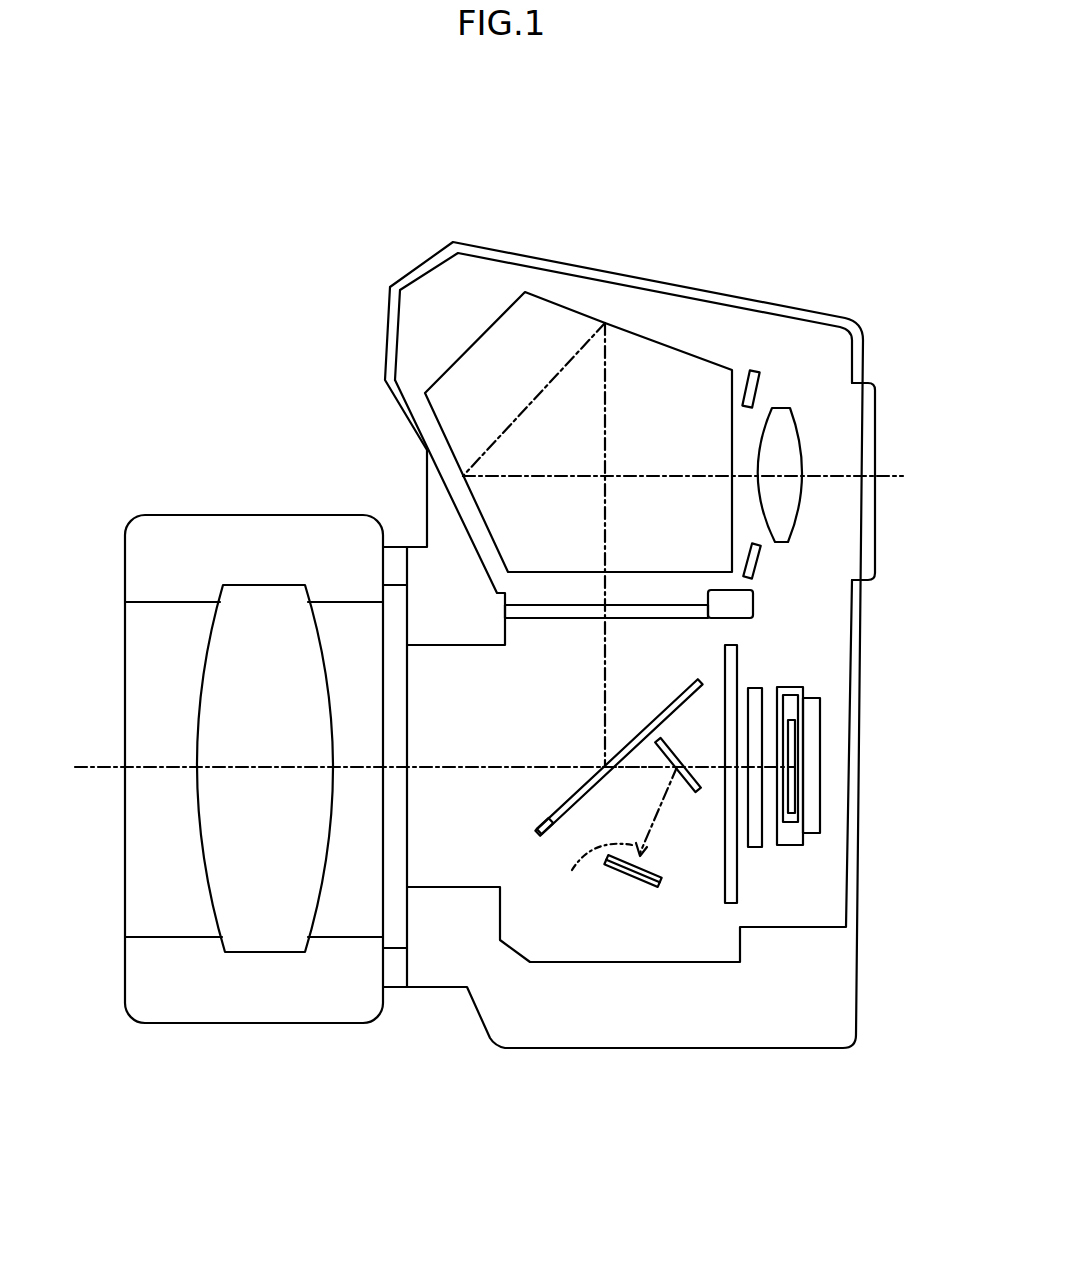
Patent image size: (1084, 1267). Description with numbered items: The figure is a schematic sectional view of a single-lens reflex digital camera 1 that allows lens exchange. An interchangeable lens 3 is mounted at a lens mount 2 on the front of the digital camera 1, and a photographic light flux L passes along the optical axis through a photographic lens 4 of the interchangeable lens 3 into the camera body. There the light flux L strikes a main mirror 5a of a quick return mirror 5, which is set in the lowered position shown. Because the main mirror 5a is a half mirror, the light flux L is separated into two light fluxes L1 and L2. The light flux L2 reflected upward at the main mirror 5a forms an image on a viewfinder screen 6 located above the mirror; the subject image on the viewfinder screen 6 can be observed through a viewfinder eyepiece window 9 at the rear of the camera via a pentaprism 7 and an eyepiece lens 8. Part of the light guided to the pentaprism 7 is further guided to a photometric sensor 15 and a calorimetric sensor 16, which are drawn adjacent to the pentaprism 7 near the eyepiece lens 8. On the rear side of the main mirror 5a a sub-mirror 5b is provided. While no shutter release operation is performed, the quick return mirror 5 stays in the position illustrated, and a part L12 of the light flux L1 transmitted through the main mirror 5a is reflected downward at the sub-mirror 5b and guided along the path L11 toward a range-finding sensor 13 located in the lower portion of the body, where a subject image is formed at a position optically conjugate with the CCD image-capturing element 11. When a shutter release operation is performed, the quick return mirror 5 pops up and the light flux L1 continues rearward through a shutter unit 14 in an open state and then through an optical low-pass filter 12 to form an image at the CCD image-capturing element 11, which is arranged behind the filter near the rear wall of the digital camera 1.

The digital camera 1 is at (588, 275).
The lens mount 2 is at (393, 560).
The interchangeable lens 3 is at (240, 515).
The photographic lens 4 is at (223, 873).
The quick return mirror 5 is at (563, 761).
The main mirror 5a is at (538, 830).
The sub-mirror 5b is at (692, 738).
The viewfinder screen 6 is at (647, 610).
The pentaprism 7 is at (672, 362).
The eyepiece lens 8 is at (788, 418).
The viewfinder eyepiece window 9 is at (863, 427).
The CCD image-capturing element 11 is at (795, 703).
The optical low-pass filter 12 is at (755, 850).
The range-finding sensor 13 is at (622, 870).
The shutter unit 14 is at (720, 890).
The photometric sensor 15 is at (758, 382).
The calorimetric sensor 16 is at (758, 565).
The photographic light flux L is at (448, 767).
The light flux transmitted through main mirror L1 is at (648, 770).
The light flux reflected at main mirror L2 is at (602, 695).
The transmitted light beam L11 is at (712, 770).
The part of transmitted light flux L12 is at (572, 881).